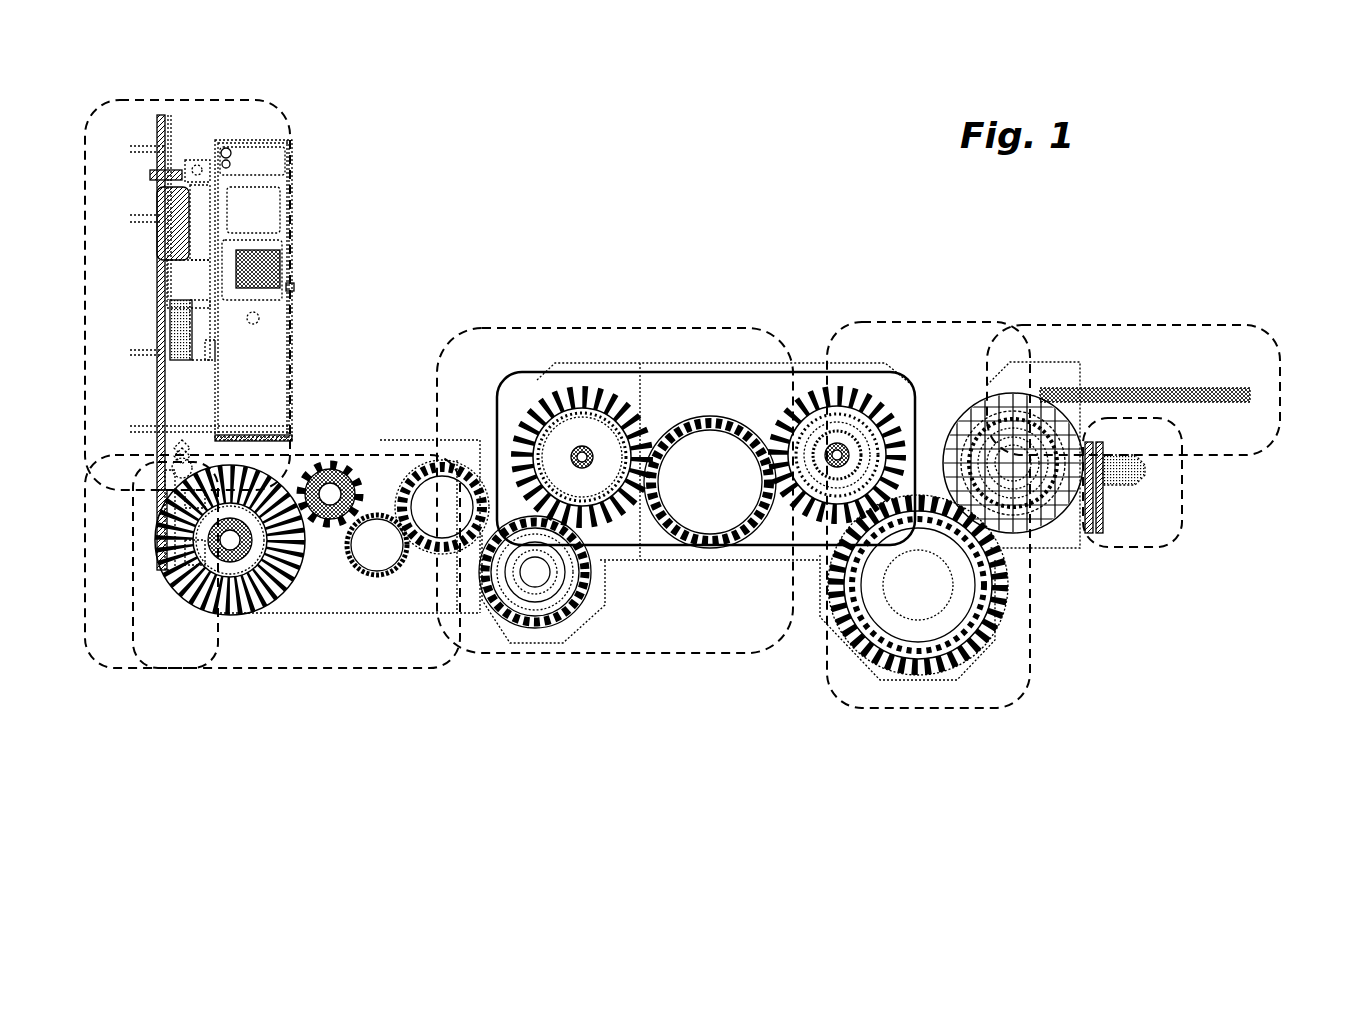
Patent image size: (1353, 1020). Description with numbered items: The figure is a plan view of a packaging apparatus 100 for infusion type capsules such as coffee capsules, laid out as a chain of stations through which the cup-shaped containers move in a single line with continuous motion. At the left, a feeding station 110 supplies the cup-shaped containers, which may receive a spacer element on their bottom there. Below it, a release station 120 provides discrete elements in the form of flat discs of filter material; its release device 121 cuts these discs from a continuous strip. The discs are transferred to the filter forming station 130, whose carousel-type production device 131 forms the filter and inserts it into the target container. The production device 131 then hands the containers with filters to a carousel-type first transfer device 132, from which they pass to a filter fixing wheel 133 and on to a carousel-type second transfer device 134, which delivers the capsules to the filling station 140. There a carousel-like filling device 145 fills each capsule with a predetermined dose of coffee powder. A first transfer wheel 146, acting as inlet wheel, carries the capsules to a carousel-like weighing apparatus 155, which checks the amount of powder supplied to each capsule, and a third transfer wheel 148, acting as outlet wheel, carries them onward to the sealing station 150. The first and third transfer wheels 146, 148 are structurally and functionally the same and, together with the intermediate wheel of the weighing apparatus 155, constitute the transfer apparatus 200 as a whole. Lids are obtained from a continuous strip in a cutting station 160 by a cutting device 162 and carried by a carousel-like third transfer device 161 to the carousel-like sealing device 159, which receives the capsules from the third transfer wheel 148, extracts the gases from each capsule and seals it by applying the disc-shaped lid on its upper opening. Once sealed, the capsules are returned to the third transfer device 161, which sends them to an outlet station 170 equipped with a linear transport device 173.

The packaging apparatus 100 is at (945, 303).
The feeding station 110 is at (298, 268).
The release station 120 is at (130, 667).
The release device 121 is at (157, 552).
The filter forming station 130 is at (390, 672).
The production device 131 is at (242, 608).
The first transfer device 132 is at (330, 463).
The filter fixing wheel 133 is at (403, 583).
The second transfer device 134 is at (425, 470).
The filling station 140 is at (648, 655).
The filling device 145 is at (565, 597).
The first transfer wheel 146 is at (497, 410).
The third transfer wheel 148 is at (775, 402).
The sealing station 150 is at (825, 332).
The weighing apparatus 155 is at (655, 400).
The sealing device 159 is at (865, 640).
The cutting station 160 is at (1152, 553).
The third transfer device 161 is at (945, 440).
The cutting device 162 is at (1145, 465).
The outlet station 170 is at (1220, 457).
The linear transport device 173 is at (1152, 388).
The transfer apparatus 200 is at (505, 340).